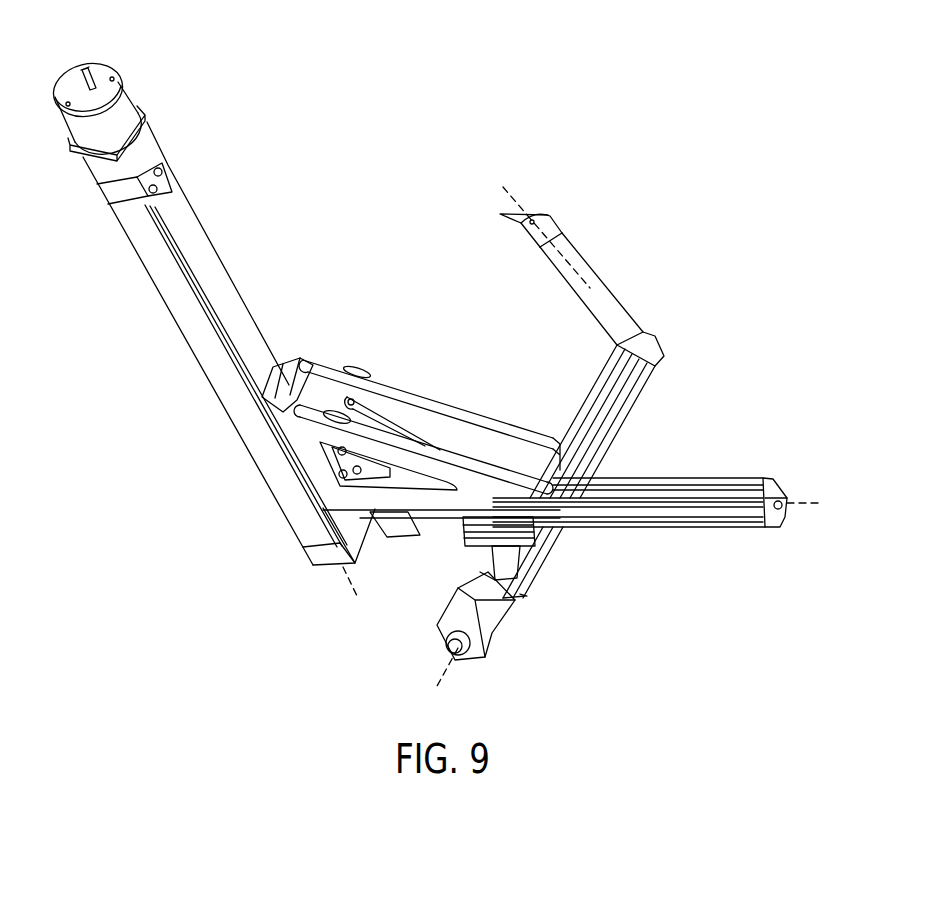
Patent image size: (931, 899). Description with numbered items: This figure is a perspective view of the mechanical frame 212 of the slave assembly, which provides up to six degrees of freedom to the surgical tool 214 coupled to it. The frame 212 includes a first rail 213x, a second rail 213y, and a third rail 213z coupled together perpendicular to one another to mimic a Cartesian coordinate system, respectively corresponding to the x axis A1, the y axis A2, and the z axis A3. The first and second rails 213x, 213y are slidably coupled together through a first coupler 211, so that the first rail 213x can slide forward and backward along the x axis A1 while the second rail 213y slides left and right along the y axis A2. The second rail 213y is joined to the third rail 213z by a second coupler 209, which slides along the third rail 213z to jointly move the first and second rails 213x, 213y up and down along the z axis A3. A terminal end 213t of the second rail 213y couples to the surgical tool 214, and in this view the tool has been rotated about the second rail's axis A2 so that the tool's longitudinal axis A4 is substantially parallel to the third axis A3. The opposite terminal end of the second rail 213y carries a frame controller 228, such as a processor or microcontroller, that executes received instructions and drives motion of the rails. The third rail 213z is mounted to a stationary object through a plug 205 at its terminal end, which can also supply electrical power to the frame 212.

The plug 205 is at (125, 67).
The mechanical frame 212 is at (294, 229).
The third rail 213z is at (170, 313).
The second coupler 209 is at (287, 363).
The first coupler 211 is at (462, 542).
The frame controller 228 is at (503, 641).
The second rail 213y is at (549, 553).
The first rail 213x is at (683, 528).
The terminal end 213t is at (667, 376).
The surgical tool 214 is at (620, 255).
The x axis A1 is at (807, 510).
The y axis A2 is at (447, 673).
The z axis A3 is at (346, 594).
The longitudinal axis A4 is at (510, 192).